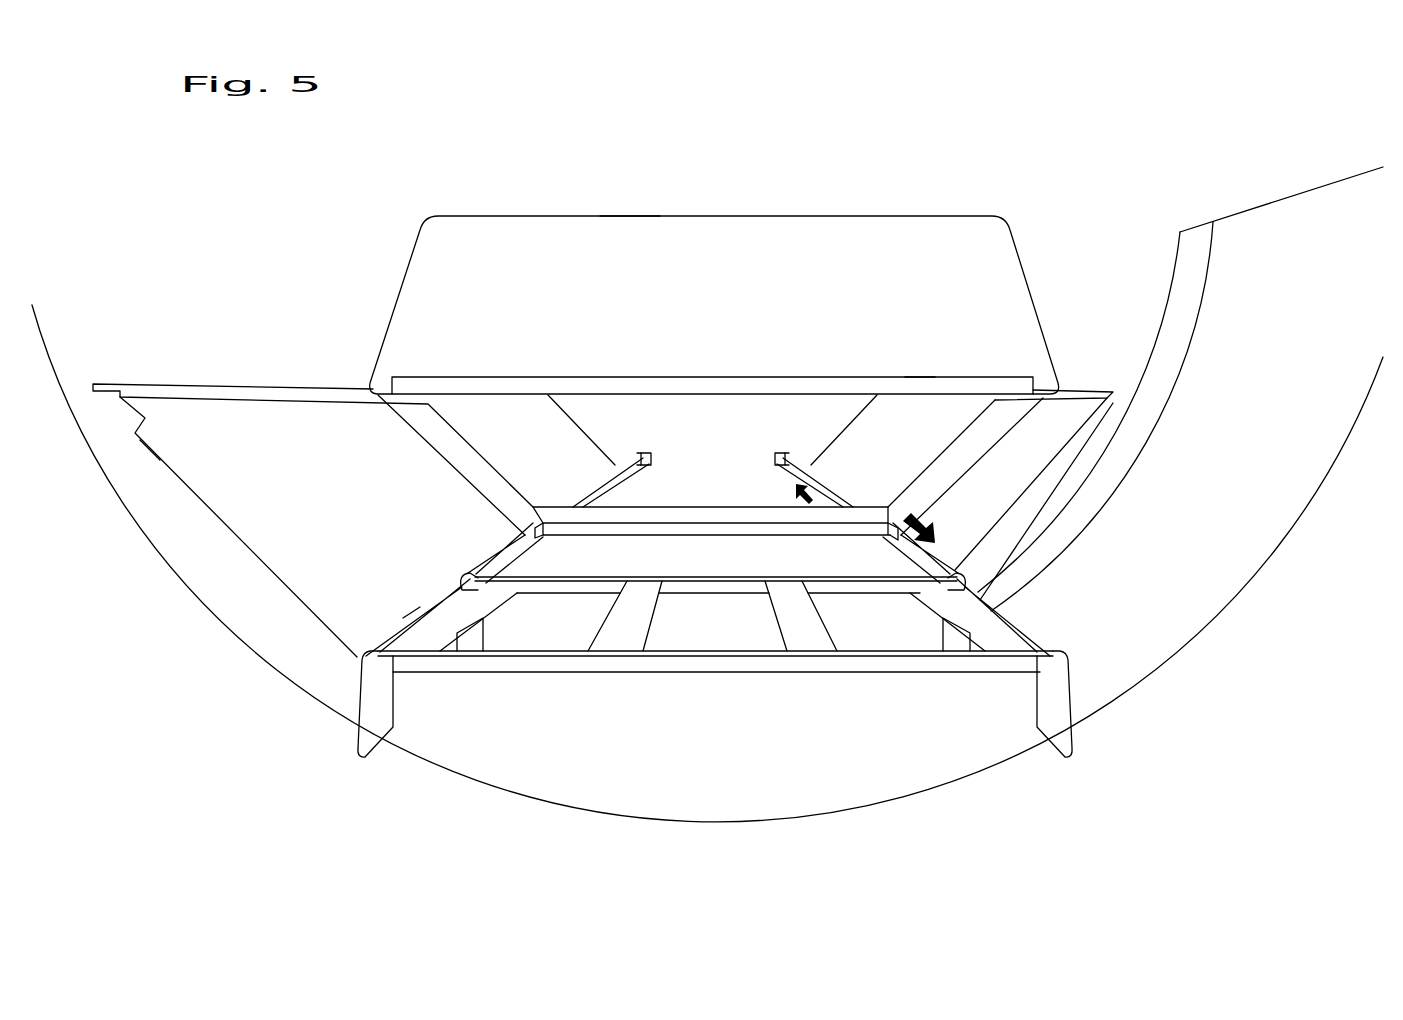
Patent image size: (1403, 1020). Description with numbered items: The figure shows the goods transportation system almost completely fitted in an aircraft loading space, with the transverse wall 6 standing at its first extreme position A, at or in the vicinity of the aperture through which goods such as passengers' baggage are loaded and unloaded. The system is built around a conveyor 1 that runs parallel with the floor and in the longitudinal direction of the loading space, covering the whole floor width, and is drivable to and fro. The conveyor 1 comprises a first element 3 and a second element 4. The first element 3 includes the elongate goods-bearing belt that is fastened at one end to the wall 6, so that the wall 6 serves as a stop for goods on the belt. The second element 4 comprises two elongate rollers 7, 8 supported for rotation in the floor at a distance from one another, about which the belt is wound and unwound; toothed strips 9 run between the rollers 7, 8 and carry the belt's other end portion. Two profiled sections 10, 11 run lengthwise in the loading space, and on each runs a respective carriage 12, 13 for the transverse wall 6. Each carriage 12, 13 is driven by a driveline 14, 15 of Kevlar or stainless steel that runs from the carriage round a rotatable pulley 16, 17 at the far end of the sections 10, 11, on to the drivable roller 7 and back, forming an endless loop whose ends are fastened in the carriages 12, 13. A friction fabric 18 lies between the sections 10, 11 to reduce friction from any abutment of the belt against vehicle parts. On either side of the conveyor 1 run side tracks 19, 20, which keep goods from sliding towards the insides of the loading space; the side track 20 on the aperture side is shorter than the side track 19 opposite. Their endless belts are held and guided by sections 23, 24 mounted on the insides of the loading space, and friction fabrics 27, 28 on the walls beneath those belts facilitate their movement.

The conveyor 1 is at (403, 618).
The first element 3 is at (673, 555).
The second element 4 is at (713, 677).
The wall 6 is at (795, 228).
The drivable roller 7 is at (857, 588).
The roller 8 is at (902, 663).
The toothed strip 9 is at (627, 637).
The profiled section 10 is at (397, 637).
The profiled section 11 is at (1055, 655).
The carriage 12 is at (543, 515).
The carriage 13 is at (888, 513).
The driveline 14 is at (503, 568).
The driveline 15 is at (927, 570).
The pulley 16 is at (643, 454).
The pulley 17 is at (784, 454).
The friction fabric 18 is at (753, 555).
The side track 19 is at (223, 532).
The side track 20 is at (1080, 420).
The section 23 is at (158, 388).
The section 24 is at (1068, 397).
The friction fabric 27 is at (225, 426).
The friction fabric 28 is at (920, 420).
The first extreme position A is at (628, 240).